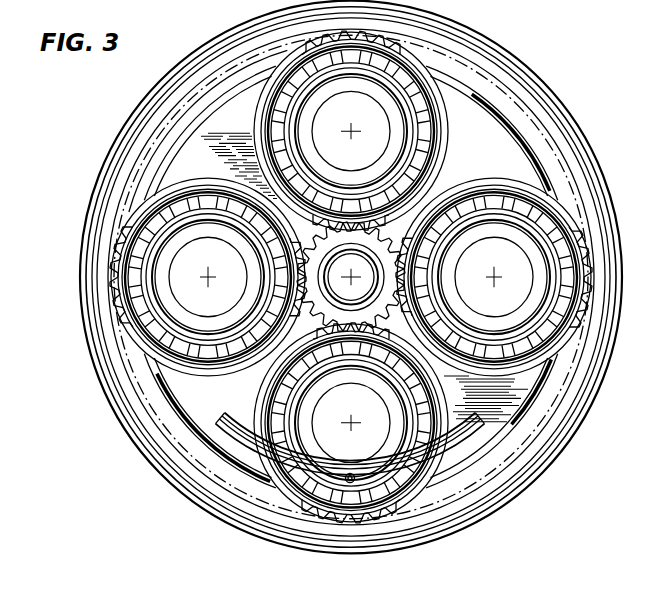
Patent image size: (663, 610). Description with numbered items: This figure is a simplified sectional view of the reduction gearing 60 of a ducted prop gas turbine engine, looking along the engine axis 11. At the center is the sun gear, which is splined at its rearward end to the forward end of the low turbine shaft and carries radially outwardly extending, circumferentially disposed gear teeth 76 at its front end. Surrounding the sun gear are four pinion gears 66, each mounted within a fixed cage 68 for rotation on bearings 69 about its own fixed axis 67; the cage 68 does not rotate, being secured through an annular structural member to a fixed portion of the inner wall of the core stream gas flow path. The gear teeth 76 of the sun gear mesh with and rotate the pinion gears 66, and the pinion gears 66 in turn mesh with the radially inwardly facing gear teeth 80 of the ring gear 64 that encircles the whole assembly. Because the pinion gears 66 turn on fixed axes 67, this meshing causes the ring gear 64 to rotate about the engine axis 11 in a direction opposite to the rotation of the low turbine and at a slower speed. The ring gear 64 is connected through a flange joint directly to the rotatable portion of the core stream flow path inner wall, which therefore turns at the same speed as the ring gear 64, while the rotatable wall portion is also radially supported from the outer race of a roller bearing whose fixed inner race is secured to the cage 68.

The axis 11 is at (354, 282).
The reduction gearing 60 is at (527, 146).
The ring gear 64 is at (306, 526).
The pinion gears 66 is at (440, 130).
The fixed axes 67 is at (364, 117).
The fixed cage 68 is at (319, 302).
The bearings 69 is at (267, 403).
The gear teeth 76 is at (378, 248).
The gear teeth 80 is at (343, 528).